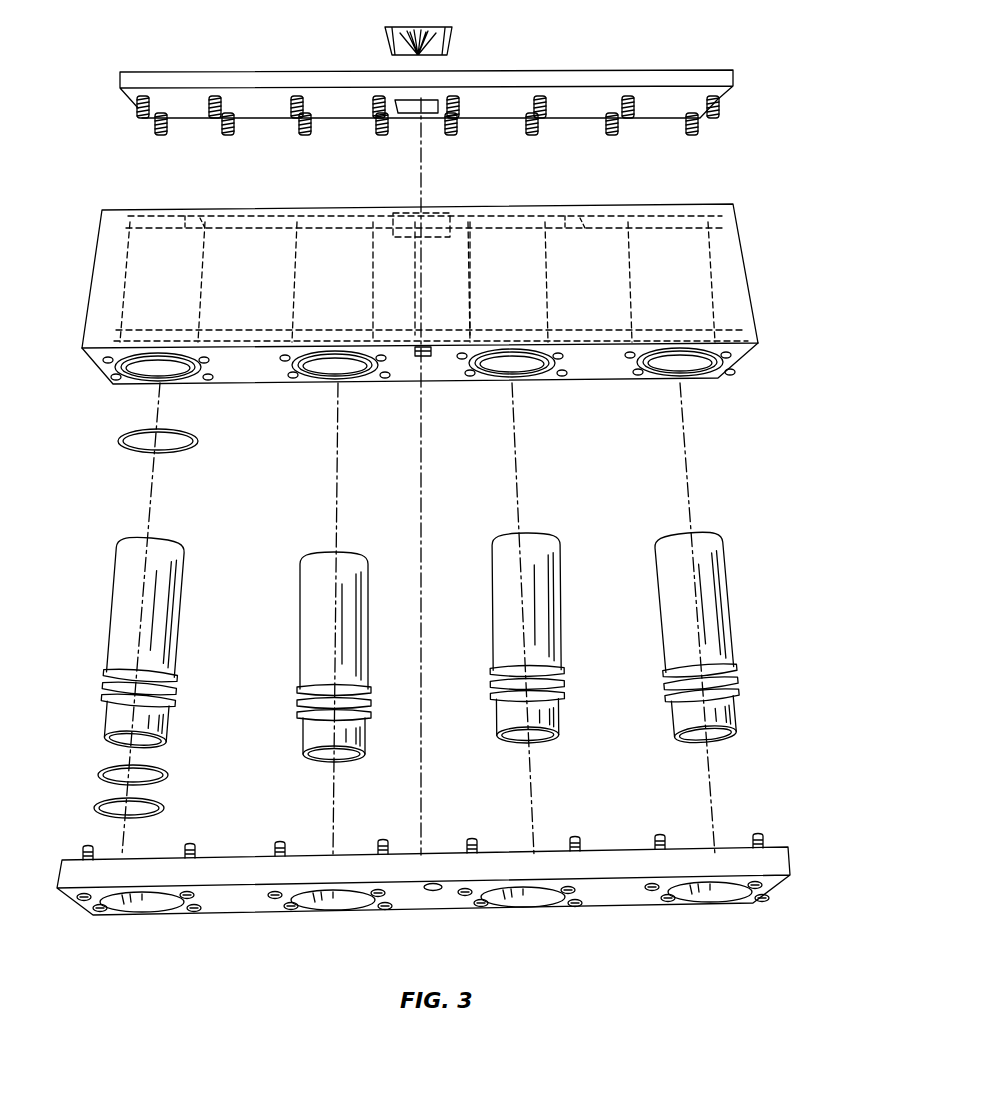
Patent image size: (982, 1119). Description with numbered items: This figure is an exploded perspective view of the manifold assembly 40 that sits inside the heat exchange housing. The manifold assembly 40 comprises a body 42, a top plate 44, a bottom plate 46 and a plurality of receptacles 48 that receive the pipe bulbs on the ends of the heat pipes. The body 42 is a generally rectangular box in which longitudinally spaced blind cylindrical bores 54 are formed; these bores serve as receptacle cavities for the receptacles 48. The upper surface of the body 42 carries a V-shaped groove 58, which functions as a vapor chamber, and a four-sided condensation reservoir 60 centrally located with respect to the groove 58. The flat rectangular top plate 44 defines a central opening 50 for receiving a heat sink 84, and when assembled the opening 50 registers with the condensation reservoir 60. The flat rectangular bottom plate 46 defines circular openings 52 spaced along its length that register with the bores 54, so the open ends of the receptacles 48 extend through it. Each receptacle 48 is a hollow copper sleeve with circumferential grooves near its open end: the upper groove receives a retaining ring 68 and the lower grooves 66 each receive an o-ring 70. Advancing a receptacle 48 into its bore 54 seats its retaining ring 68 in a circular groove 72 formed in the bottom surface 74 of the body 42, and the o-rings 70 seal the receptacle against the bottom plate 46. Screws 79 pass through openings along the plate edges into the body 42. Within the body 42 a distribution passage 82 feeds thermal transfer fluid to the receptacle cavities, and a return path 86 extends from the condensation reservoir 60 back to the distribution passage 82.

The manifold assembly 40 is at (52, 226).
The body 42 is at (437, 298).
The top plate 44 is at (600, 78).
The bottom plate 46 is at (446, 902).
The receptacle 48 is at (118, 642).
The central opening 50 is at (405, 113).
The circular opening 52 is at (150, 911).
The blind cylindrical bore 54 is at (138, 371).
The V-shaped groove 58 is at (568, 216).
The condensation reservoir 60 is at (445, 212).
The lower circumferential groove 66 is at (107, 690).
The retaining ring 68 is at (200, 445).
The o-ring 70 is at (170, 775).
The circular groove 72 is at (150, 672).
The bottom surface 74 is at (592, 380).
The screw 79 is at (162, 137).
The distribution passage 82 is at (260, 332).
The heat sink 84 is at (447, 40).
The return path 86 is at (420, 307).